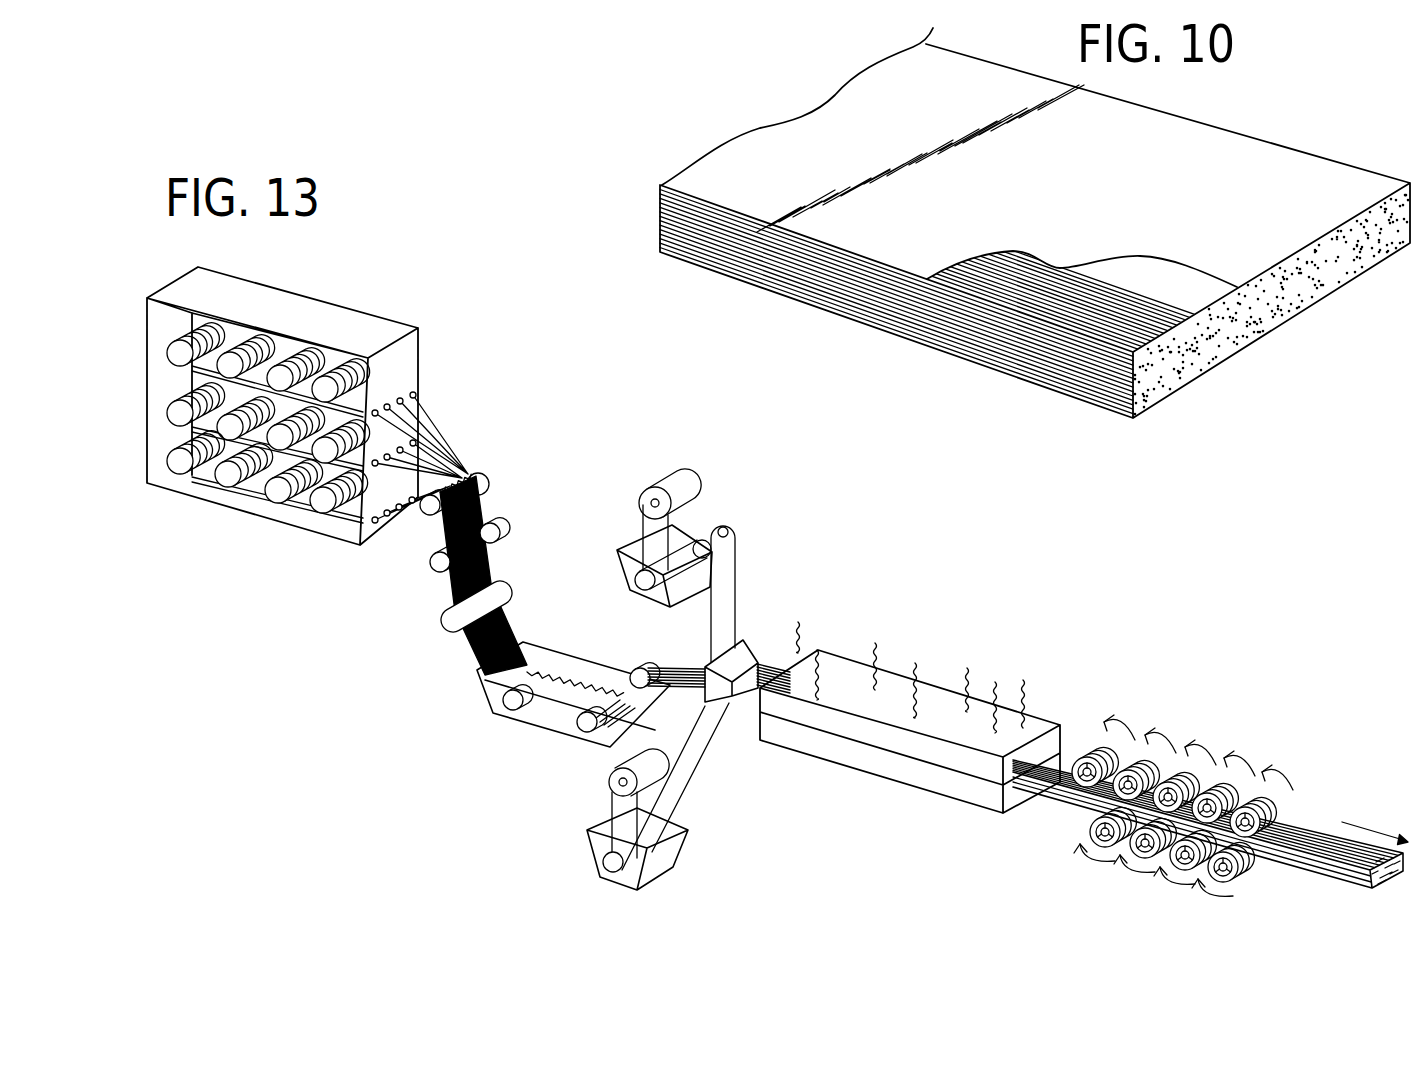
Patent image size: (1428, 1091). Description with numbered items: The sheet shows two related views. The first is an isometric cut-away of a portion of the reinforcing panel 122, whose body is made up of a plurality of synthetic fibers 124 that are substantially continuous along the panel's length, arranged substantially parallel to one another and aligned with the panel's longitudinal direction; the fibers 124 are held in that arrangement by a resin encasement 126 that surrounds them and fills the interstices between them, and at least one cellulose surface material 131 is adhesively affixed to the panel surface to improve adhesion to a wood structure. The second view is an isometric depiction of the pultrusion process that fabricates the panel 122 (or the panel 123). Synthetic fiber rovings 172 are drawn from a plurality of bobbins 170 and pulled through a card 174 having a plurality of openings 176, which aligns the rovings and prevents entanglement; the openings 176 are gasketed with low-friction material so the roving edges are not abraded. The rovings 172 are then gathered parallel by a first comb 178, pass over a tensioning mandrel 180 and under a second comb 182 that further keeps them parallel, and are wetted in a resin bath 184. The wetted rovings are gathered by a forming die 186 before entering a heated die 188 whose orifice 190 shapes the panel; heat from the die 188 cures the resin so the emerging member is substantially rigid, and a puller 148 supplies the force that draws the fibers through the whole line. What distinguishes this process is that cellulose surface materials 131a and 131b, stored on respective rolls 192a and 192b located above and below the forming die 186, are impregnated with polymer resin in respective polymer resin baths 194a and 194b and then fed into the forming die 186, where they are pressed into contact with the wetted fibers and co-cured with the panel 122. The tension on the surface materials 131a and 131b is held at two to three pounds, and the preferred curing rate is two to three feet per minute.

In FIG. 10, the panel 122 is at (786, 104).
In FIG. 13, the panel 122 is at (1214, 769).
In FIG. 13, the reinforcing panel 123 is at (1214, 769).
In FIG. 10, the synthetic fibers 124 is at (1055, 365).
In FIG. 10, the resin encasement 126 is at (1175, 380).
In FIG. 10, the cellulose surface material 131 is at (660, 183).
In FIG. 13, the cellulose surface material 131a is at (727, 573).
In FIG. 13, the cellulose surface material 131b is at (677, 782).
In FIG. 13, the puller 148 is at (1228, 738).
In FIG. 13, the bobbins 170 is at (327, 387).
In FIG. 13, the synthetic fiber rovings 172 is at (423, 430).
In FIG. 13, the card 174 is at (420, 355).
In FIG. 13, the openings 176 is at (417, 395).
In FIG. 13, the first comb 178 is at (470, 468).
In FIG. 13, the tensioning mandrel 180 is at (493, 527).
In FIG. 13, the second comb 182 is at (497, 583).
In FIG. 13, the resin bath 184 is at (570, 670).
In FIG. 13, the forming die 186 is at (747, 653).
In FIG. 13, the heated die 188 is at (893, 697).
In FIG. 13, the orifice 190 is at (1043, 752).
In FIG. 13, the roll 192a is at (678, 487).
In FIG. 13, the roll 192b is at (610, 780).
In FIG. 13, the polymer resin bath 194a is at (677, 538).
In FIG. 13, the polymer resin bath 194b is at (602, 827).